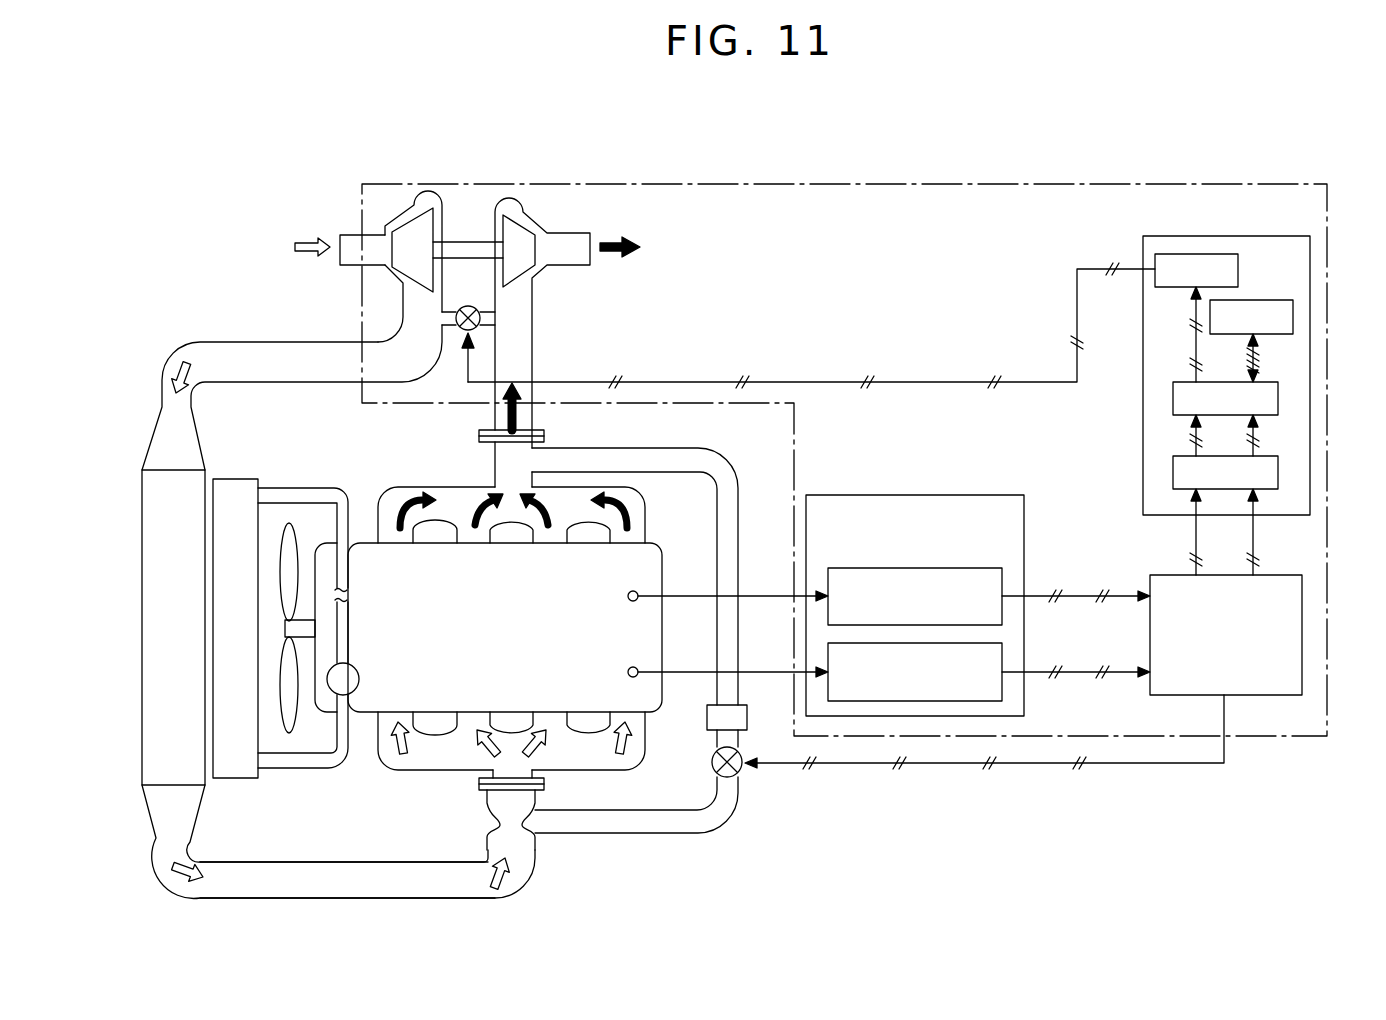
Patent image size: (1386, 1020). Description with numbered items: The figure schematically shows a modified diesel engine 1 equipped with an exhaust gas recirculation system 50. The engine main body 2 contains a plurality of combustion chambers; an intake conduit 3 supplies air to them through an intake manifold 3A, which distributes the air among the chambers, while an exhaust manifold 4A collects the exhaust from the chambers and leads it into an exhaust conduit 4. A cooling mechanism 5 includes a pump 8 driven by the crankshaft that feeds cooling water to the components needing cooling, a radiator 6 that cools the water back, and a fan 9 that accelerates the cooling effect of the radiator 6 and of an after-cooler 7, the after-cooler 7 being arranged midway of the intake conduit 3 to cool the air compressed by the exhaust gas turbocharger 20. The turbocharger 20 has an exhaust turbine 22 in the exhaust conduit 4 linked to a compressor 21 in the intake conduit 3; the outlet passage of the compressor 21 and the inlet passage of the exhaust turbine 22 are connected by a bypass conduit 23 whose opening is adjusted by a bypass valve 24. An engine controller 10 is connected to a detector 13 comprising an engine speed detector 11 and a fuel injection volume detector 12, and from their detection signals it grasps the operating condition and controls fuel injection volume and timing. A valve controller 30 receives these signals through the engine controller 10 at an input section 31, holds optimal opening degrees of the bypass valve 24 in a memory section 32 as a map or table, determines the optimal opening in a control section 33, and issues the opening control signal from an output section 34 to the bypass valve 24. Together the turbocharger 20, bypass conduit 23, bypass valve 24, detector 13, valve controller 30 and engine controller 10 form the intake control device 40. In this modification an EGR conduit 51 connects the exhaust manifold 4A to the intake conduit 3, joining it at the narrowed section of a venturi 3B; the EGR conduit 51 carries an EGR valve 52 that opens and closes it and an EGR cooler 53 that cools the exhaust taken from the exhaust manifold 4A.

The diesel engine 1 is at (1062, 218).
The engine main body 2 is at (650, 698).
The intake conduit 3 is at (335, 872).
The intake manifold 3A is at (447, 758).
The venturi 3B is at (535, 838).
The exhaust conduit 4 is at (537, 412).
The exhaust manifold 4A is at (432, 495).
The cooling mechanism 5 is at (311, 626).
The radiator 6 is at (228, 778).
The after-cooler 7 is at (142, 620).
The pump 8 is at (359, 677).
The fan 9 is at (292, 548).
The engine controller 10 is at (1262, 697).
The engine speed detector 11 is at (1002, 612).
The fuel injection volume detector 12 is at (1002, 690).
The detector 13 is at (1024, 555).
The exhaust gas turbocharger 20 is at (465, 275).
The compressor 21 is at (440, 192).
The exhaust turbine 22 is at (541, 296).
The bypass conduit 23 is at (485, 310).
The bypass valve 24 is at (473, 330).
The valve controller 30 is at (1227, 355).
The input section 31 is at (1278, 472).
The memory section 32 is at (1293, 317).
The control section 33 is at (1278, 398).
The output section 34 is at (1200, 254).
The intake control device 40 is at (820, 182).
The exhaust gas recirculation system 50 is at (928, 586).
The EGR conduit 51 is at (725, 470).
The EGR valve 52 is at (740, 775).
The EGR cooler 53 is at (747, 718).